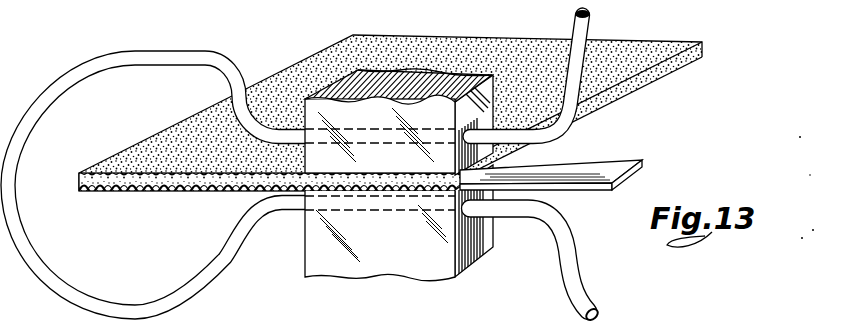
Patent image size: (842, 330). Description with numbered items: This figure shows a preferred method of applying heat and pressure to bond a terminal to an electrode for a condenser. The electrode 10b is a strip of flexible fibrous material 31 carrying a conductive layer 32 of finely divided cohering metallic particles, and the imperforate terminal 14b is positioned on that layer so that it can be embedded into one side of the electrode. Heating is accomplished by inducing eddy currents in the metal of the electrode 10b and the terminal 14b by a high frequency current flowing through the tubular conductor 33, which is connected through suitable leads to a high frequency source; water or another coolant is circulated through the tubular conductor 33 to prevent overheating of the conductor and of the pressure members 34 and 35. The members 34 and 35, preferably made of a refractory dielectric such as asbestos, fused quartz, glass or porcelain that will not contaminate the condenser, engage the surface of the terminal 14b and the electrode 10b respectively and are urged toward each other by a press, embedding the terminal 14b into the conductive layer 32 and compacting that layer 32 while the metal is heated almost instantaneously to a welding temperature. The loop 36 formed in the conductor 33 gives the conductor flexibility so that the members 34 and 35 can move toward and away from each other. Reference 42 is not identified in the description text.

The electrode 10b is at (618, 33).
The conductive layer 32 is at (352, 50).
The flexible fibrous material 31 is at (138, 192).
The loop 36 is at (50, 276).
The member 34 is at (416, 159).
The member 35 is at (418, 236).
The terminal 14b is at (578, 166).
The tubular conductor 33 is at (568, 255).
The conduit 42 is at (462, 325).